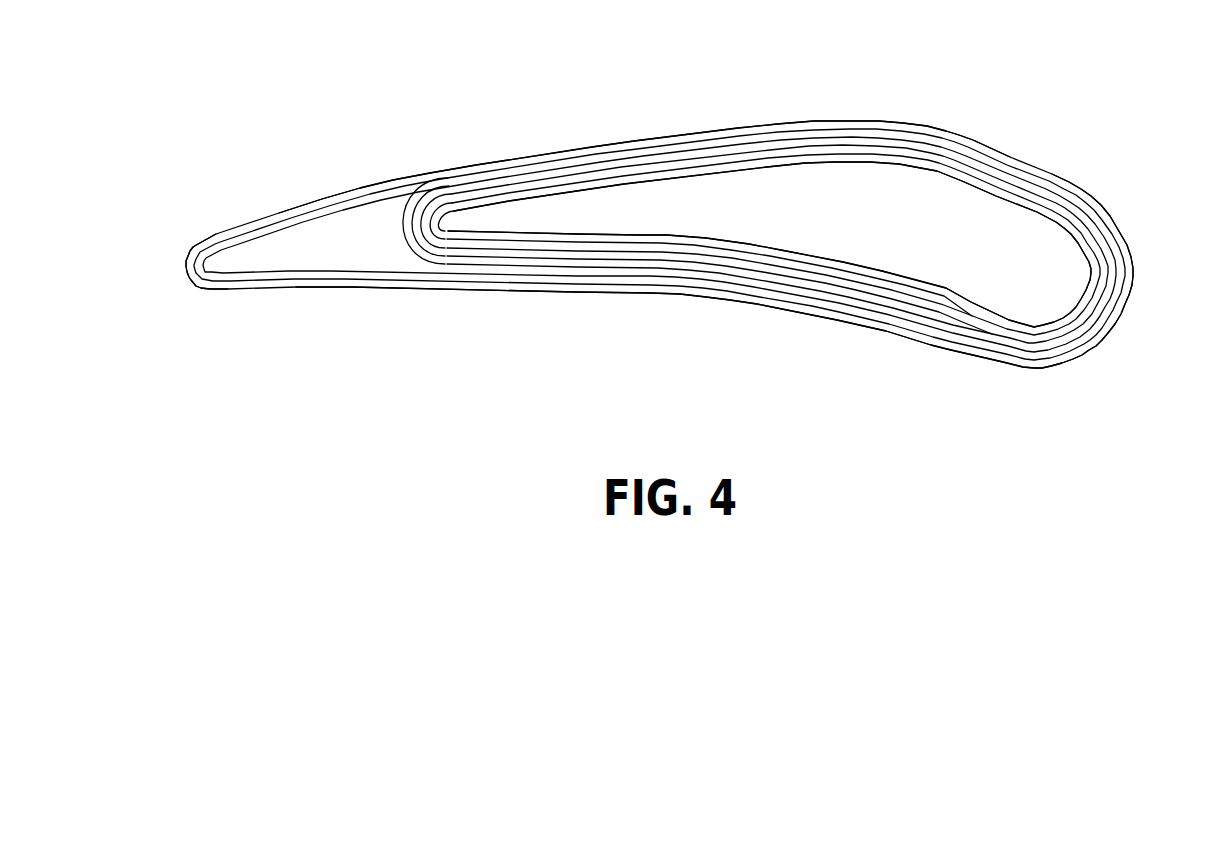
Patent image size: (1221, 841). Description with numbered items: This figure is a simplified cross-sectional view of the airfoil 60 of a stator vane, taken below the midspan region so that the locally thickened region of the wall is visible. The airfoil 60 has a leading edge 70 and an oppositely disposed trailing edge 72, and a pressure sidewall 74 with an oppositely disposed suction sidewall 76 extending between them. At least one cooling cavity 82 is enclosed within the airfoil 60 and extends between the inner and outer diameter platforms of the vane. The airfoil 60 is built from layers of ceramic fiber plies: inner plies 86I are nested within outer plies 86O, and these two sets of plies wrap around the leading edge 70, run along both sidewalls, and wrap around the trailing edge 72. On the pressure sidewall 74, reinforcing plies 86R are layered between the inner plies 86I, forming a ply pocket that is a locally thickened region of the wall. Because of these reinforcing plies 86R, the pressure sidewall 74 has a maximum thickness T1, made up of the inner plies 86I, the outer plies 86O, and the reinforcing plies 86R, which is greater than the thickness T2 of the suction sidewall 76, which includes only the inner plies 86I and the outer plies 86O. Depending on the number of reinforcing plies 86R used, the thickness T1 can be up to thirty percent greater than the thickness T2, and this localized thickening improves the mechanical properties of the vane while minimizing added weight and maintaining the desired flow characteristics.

The airfoil 60 is at (1138, 163).
The leading edge 70 is at (1131, 302).
The trailing edge 72 is at (184, 264).
The pressure sidewall 74 is at (597, 296).
The suction sidewall 76 is at (703, 132).
The cooling cavity 82 is at (769, 244).
The outer plies 86O is at (532, 138).
The inner plies 86I is at (917, 150).
The reinforcing plies 86R is at (734, 292).
The thickness of pressure sidewall T1 is at (788, 313).
The thickness of suction sidewall T2 is at (801, 248).